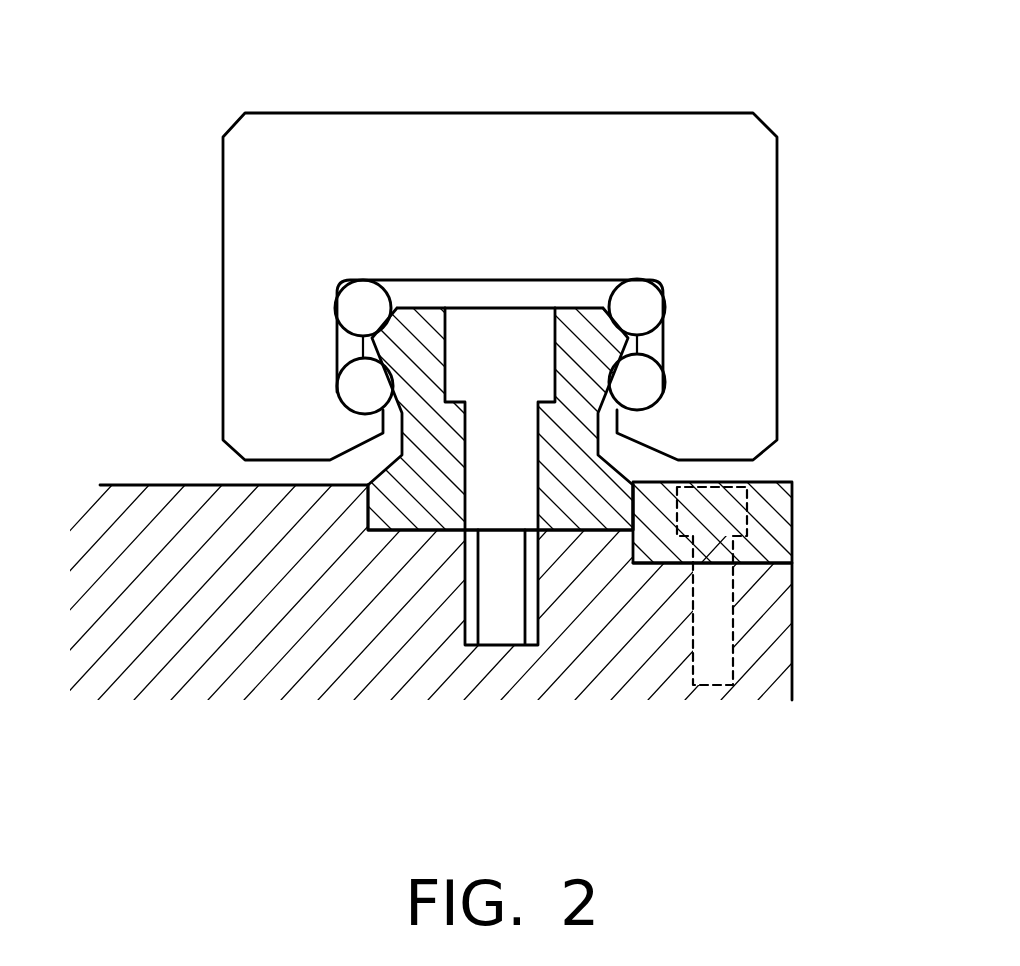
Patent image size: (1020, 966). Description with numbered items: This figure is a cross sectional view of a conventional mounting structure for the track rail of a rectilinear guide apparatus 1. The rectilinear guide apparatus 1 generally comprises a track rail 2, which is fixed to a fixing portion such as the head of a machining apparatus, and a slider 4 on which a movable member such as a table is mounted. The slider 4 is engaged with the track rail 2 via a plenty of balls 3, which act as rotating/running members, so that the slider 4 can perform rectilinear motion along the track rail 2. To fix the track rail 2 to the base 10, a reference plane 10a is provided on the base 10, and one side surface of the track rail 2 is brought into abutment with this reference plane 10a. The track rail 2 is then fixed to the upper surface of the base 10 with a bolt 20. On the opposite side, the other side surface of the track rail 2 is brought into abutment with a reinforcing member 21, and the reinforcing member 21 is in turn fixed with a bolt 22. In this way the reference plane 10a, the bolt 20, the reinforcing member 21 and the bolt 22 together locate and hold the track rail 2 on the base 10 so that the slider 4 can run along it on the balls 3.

The rectilinear guide apparatus 1 is at (500, 402).
The track rail 2 is at (590, 500).
The balls 3 is at (357, 310).
The slider 4 is at (509, 112).
The base 10 is at (133, 487).
The reference plane 10a is at (373, 510).
The bolt 20 is at (505, 325).
The reinforcing member 21 is at (792, 530).
The bolt 22 is at (715, 622).